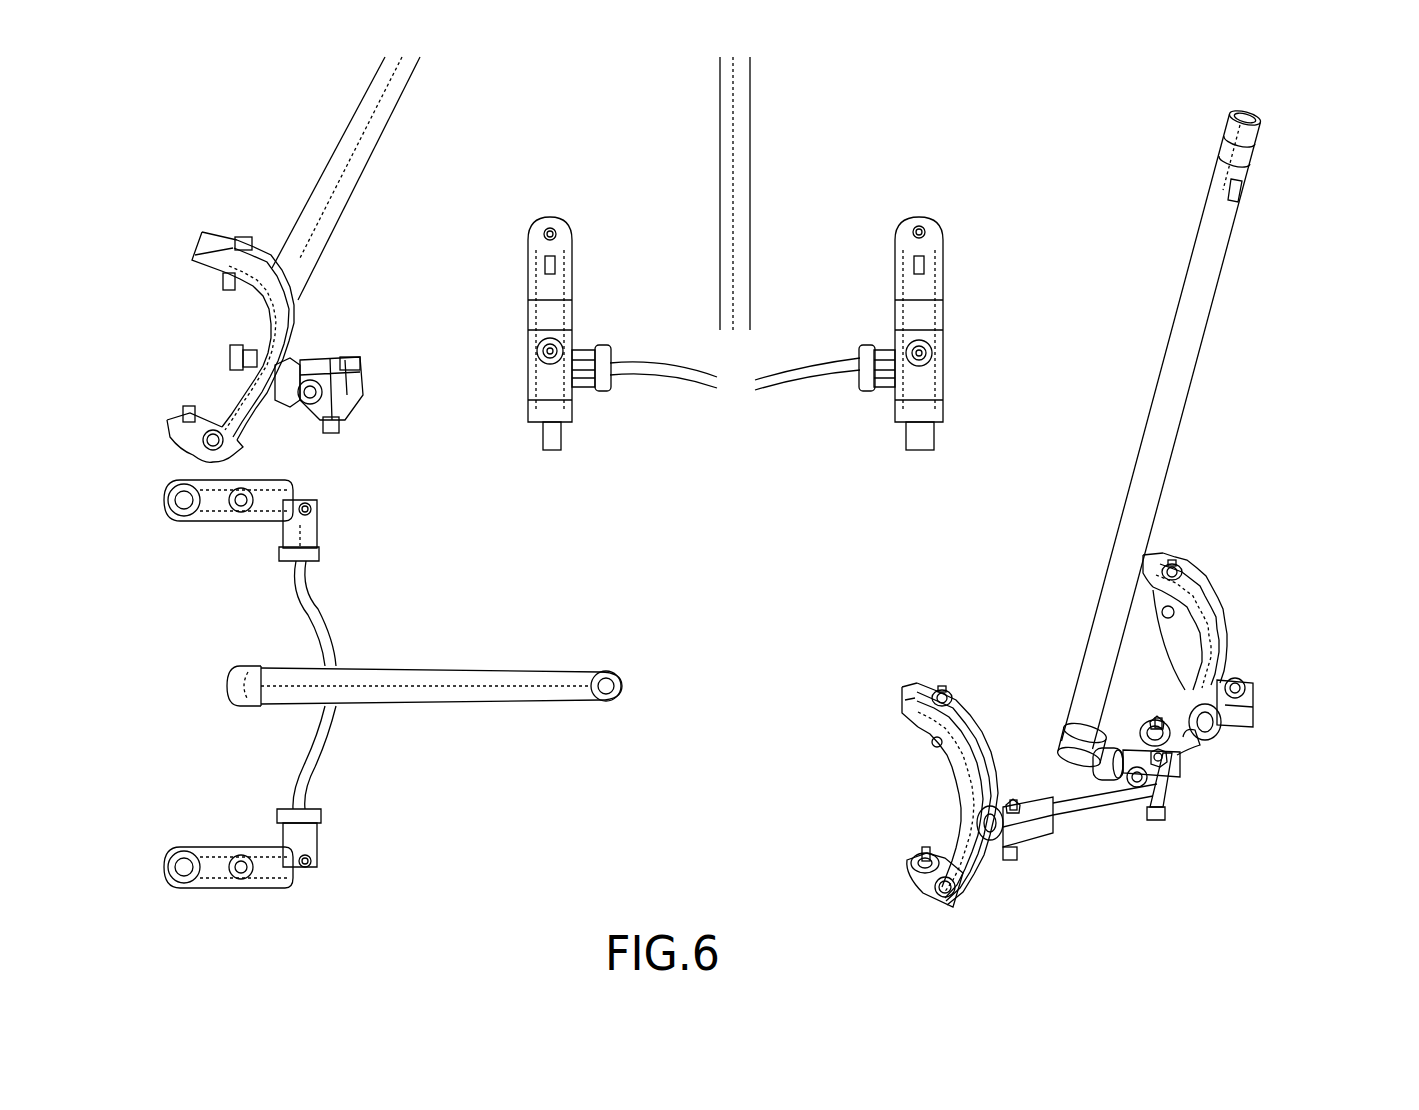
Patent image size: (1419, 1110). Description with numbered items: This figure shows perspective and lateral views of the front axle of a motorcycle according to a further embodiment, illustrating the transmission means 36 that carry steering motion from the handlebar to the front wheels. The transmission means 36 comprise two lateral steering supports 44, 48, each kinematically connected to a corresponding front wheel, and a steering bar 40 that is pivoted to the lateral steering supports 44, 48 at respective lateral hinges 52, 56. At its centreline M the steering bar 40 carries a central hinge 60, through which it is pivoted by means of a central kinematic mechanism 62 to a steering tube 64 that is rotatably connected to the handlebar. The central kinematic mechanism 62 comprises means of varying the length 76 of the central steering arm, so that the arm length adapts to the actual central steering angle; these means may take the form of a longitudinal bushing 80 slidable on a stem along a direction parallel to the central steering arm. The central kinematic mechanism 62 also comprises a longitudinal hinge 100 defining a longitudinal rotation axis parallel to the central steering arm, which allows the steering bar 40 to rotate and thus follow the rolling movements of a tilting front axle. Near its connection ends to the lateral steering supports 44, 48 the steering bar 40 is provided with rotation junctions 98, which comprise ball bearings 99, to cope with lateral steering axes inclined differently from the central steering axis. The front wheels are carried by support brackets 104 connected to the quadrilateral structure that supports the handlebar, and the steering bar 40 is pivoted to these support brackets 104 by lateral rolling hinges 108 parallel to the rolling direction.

The transmission means 36 is at (661, 586).
The steering bar 40 is at (321, 642).
The lateral steering support 44 is at (581, 521).
The lateral steering support 48 is at (293, 488).
The lateral hinge 52 is at (313, 863).
The lateral hinge 56 is at (835, 728).
The central hinge 60 is at (351, 359).
The central kinematic mechanism 62 is at (1127, 715).
The steering tube 64 is at (767, 403).
The means of varying the length 76 is at (1097, 775).
The longitudinal bushing 80 is at (1110, 747).
The rotation junction 98 is at (1171, 830).
The ball bearing 99 is at (1099, 772).
The longitudinal hinge 100 is at (1072, 733).
The support bracket 104 is at (912, 685).
The rolling hinge 108 is at (535, 355).
The centreline M is at (1170, 823).